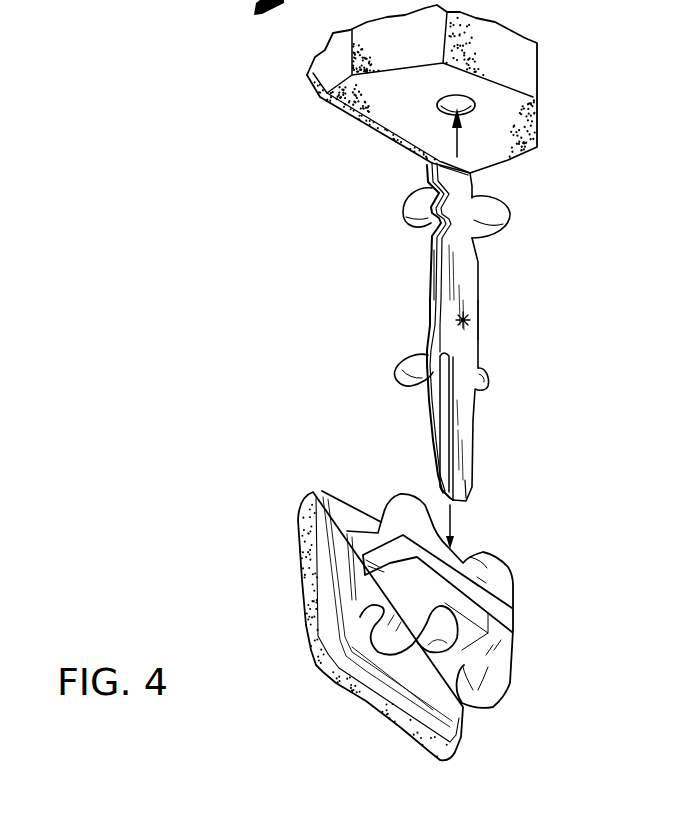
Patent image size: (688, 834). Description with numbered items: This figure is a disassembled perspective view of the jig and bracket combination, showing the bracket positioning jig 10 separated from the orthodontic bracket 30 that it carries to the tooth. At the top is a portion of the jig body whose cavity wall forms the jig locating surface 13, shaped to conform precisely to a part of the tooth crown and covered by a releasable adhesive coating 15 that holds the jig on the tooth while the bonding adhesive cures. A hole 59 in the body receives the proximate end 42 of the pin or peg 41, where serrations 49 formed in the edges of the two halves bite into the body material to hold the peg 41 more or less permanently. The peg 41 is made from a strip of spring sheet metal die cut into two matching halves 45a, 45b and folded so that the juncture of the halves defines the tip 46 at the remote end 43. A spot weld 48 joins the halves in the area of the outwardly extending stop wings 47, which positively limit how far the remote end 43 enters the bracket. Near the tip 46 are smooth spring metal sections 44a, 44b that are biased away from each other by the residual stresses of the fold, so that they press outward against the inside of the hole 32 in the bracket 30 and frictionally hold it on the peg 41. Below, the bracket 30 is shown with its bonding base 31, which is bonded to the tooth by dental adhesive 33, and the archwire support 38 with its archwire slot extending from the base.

The bracket positioning jig 10 is at (308, 142).
The jig locating surface 13 is at (305, 79).
The releasable adhesive coating 15 is at (393, 141).
The hole in the body 59 is at (439, 107).
The pin or peg 41 is at (422, 286).
The proximate end of the peg 42 is at (472, 175).
The serrations 49 is at (511, 214).
The first half of the strip 45a is at (431, 262).
The second half of the strip 45b is at (462, 342).
The spot weld 48 is at (468, 316).
The stop wings 47 is at (489, 388).
The first spring metal section 44a is at (437, 417).
The second spring metal section 44b is at (466, 417).
The remote end of the peg 43 is at (461, 467).
The tip of the peg 46 is at (452, 505).
The orthodontic bracket 30 is at (343, 480).
The bonding base or pad 31 is at (317, 603).
The dental adhesive 33 is at (300, 562).
The archwire support 38 is at (513, 568).
The hole in the bracket 32 is at (436, 648).